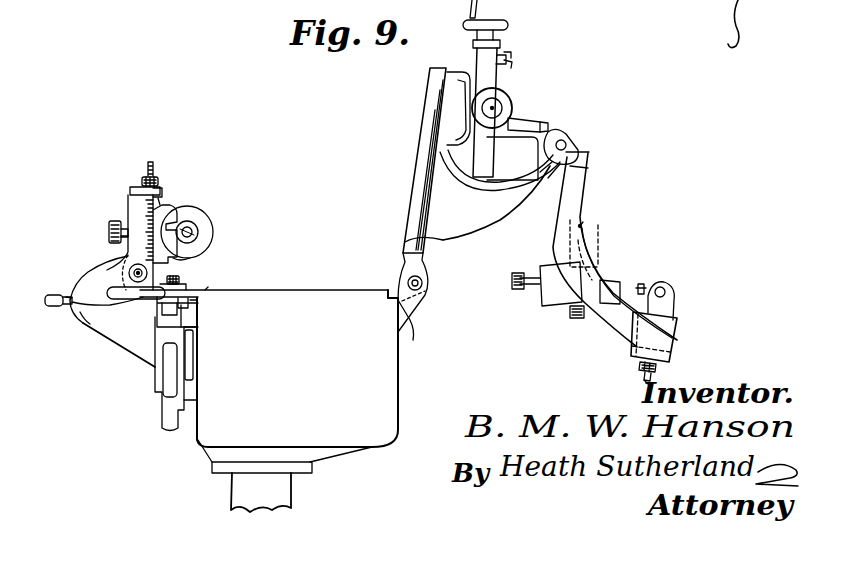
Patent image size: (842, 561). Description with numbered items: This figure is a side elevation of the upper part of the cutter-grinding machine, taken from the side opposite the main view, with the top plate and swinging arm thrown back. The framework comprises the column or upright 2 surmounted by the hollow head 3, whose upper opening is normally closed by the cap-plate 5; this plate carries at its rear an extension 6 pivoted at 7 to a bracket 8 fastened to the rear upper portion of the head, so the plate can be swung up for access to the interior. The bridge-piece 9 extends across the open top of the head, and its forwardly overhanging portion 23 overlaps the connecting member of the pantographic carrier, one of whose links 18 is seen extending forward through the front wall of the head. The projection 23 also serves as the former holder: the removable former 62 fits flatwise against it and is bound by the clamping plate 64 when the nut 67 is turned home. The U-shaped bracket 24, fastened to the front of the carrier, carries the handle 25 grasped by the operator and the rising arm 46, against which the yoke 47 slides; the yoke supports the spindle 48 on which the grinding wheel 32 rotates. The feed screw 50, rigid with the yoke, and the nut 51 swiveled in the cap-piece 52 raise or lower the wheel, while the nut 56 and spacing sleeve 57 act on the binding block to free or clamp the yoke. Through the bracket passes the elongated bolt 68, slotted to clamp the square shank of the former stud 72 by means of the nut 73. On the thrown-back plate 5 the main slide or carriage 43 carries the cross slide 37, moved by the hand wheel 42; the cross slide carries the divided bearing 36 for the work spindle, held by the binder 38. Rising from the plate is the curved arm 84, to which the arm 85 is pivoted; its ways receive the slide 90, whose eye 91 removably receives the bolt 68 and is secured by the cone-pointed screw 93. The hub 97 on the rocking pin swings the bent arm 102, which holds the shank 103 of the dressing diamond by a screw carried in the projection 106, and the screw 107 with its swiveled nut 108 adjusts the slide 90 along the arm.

The column or upright 2 is at (285, 500).
The hollow head 3 is at (392, 382).
The cap-plate 5 is at (428, 162).
The extension 6 is at (423, 280).
The pivot 7 is at (426, 290).
The bracket 8 is at (413, 324).
The bridge-piece 9 is at (245, 291).
The link 18 is at (163, 408).
The overhanging portion (former holder) 23 is at (150, 300).
The bracket 24 is at (125, 345).
The handle 25 is at (52, 307).
The grinding wheel 32 is at (213, 230).
The bearing 36 is at (502, 142).
The cross slide 37 is at (486, 82).
The binder 38 is at (546, 122).
The hand wheel 42 is at (497, 22).
The main slide or carriage 43 is at (460, 80).
The arm 46 is at (128, 210).
The yoke 47 is at (166, 222).
The spindle 48 is at (200, 256).
The feed screw 50 is at (160, 138).
The nut 51 is at (155, 195).
The cap-piece 52 is at (141, 184).
The nut 56 is at (112, 244).
The spacing sleeve 57 is at (128, 275).
The former 62 is at (90, 326).
The clamping plate 64 is at (180, 280).
The nut 67 is at (208, 288).
The bolt 68 is at (92, 276).
The former stud 72 is at (117, 289).
The nut 73 is at (186, 303).
The curved arm 84 is at (496, 232).
The arm 85 is at (578, 210).
The slide 90 is at (668, 318).
The eye 91 is at (672, 292).
The screw 93 is at (658, 262).
The hub 97 is at (562, 314).
The bent arm 102 is at (590, 258).
The shank 103 is at (588, 232).
The projection 106 is at (583, 222).
The screw 107 is at (646, 382).
The nut 108 is at (656, 368).